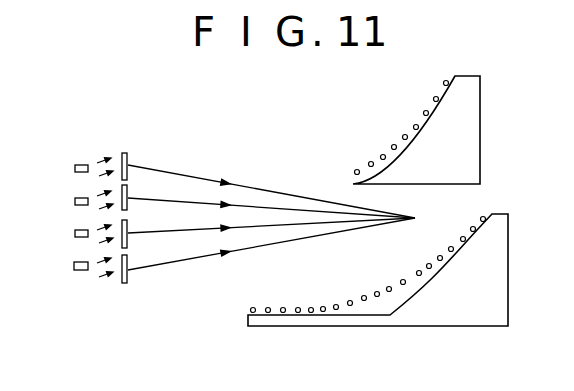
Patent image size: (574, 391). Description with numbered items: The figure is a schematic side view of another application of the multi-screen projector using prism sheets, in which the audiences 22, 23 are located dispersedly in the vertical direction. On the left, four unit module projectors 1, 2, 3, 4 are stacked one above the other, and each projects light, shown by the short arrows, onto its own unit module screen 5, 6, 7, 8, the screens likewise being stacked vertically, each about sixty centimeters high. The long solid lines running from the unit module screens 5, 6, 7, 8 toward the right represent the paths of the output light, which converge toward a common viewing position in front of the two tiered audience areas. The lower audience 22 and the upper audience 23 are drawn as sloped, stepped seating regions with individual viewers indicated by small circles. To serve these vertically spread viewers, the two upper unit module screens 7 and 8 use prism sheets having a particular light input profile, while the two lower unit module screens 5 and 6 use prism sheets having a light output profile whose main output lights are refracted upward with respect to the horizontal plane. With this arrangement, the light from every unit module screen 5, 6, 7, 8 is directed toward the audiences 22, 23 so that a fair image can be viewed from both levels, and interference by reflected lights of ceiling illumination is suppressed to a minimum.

The unit module projector 1 is at (74, 266).
The unit module projector 2 is at (75, 234).
The unit module projector 3 is at (75, 202).
The unit module projector 4 is at (73, 164).
The unit module screen 5 is at (128, 283).
The unit module screen 6 is at (128, 240).
The unit module screen 7 is at (128, 191).
The unit module screen 8 is at (128, 157).
The audience 22 is at (377, 284).
The audience 23 is at (385, 147).